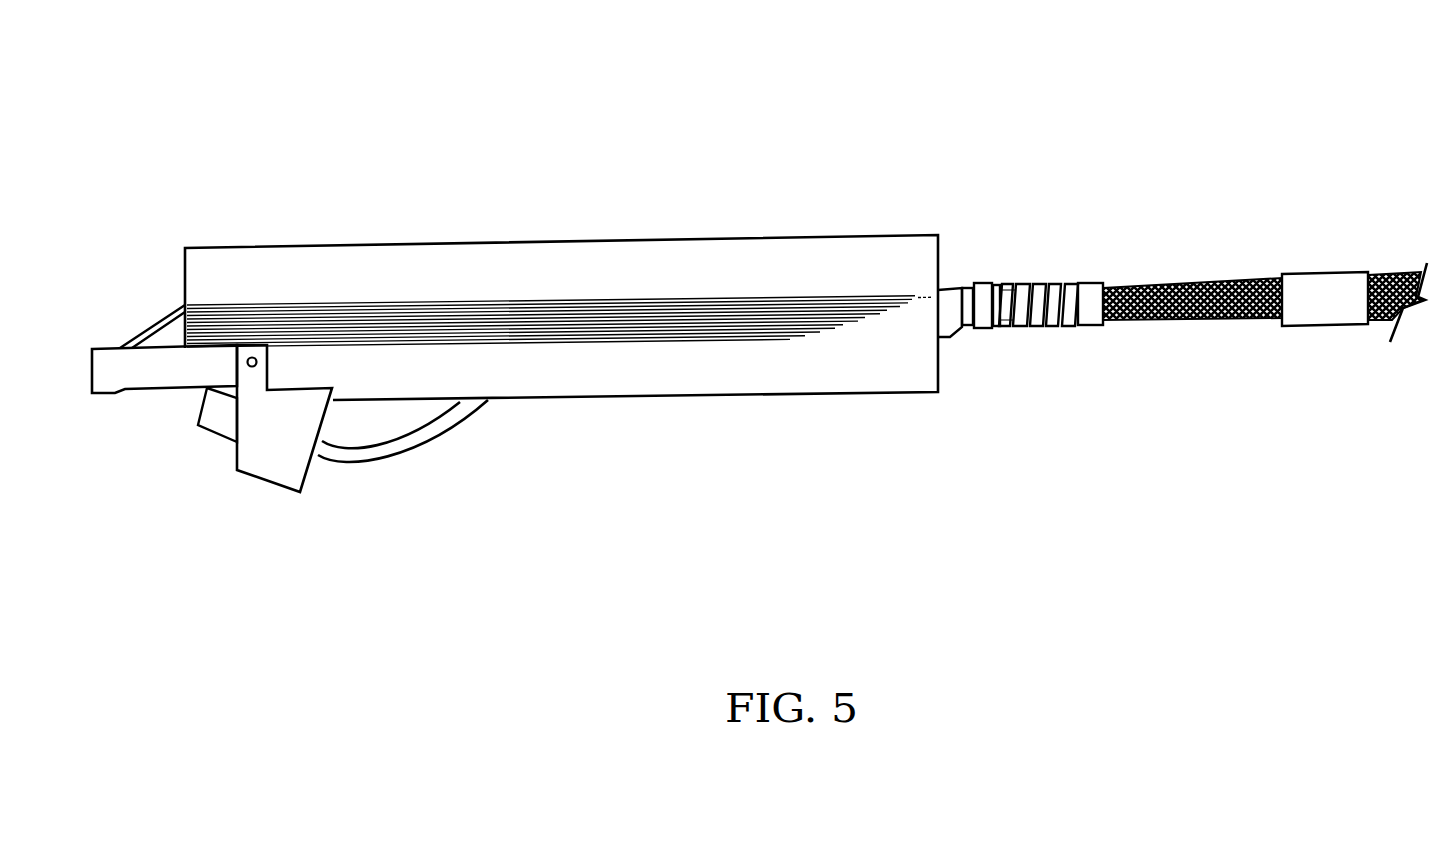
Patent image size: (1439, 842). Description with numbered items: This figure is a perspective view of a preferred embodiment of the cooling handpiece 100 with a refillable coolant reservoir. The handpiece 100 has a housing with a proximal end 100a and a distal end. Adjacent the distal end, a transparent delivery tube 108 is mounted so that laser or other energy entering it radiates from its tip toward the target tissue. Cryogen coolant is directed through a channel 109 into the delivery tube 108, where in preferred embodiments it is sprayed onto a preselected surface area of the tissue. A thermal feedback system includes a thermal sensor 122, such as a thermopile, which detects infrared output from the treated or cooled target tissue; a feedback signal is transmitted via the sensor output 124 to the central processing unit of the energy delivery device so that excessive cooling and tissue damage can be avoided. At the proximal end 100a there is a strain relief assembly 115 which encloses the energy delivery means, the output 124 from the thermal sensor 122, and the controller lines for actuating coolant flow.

The handpiece 100 is at (561, 317).
The proximal end 100a is at (937, 210).
The transparent delivery tube 108 is at (164, 369).
The channel 109 is at (152, 323).
The strain relief assembly 115 is at (1030, 325).
The thermal sensor 122 is at (265, 418).
The sensor output 124 is at (408, 455).